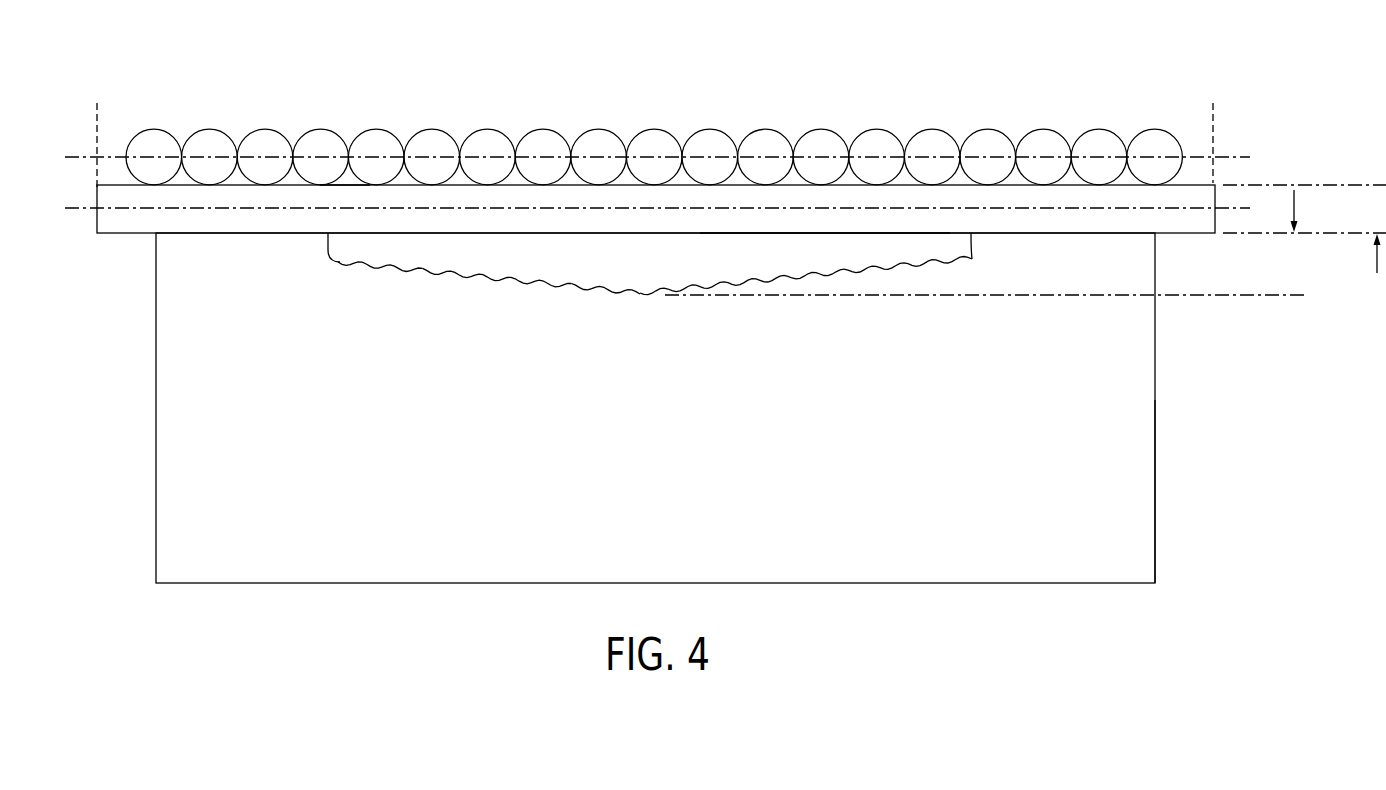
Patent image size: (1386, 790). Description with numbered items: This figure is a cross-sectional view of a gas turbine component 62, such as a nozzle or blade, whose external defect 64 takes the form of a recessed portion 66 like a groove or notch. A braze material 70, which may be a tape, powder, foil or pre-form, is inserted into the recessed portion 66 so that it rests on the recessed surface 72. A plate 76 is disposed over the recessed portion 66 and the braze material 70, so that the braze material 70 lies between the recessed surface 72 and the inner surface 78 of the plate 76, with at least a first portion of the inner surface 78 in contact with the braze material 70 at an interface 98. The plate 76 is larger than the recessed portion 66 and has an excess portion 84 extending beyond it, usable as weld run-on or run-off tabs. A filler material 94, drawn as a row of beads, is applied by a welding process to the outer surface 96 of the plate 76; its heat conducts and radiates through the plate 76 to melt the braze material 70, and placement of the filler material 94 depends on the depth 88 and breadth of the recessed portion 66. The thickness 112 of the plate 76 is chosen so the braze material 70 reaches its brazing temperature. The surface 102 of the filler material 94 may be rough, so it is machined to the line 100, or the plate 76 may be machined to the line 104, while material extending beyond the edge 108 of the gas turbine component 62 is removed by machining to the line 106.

The gas turbine component 62 is at (177, 400).
The external defect 64 is at (511, 293).
The recessed portion 66 is at (627, 271).
The braze material 70 is at (437, 263).
The recessed surface 72 is at (641, 293).
The plate 76 is at (985, 233).
The inner surface of the plate 78 is at (380, 233).
The excess portion 84 is at (225, 200).
The depth 88 is at (1294, 306).
The filler material 94 is at (598, 145).
The outer surface of the plate 96 is at (350, 184).
The interface 98 is at (825, 233).
The line 100 is at (85, 157).
The surface of the filler material 102 is at (808, 135).
The line 104 is at (84, 208).
The line 106 is at (102, 122).
The edge of the gas turbine component 108 is at (1157, 508).
The thickness of the plate 112 is at (1377, 172).